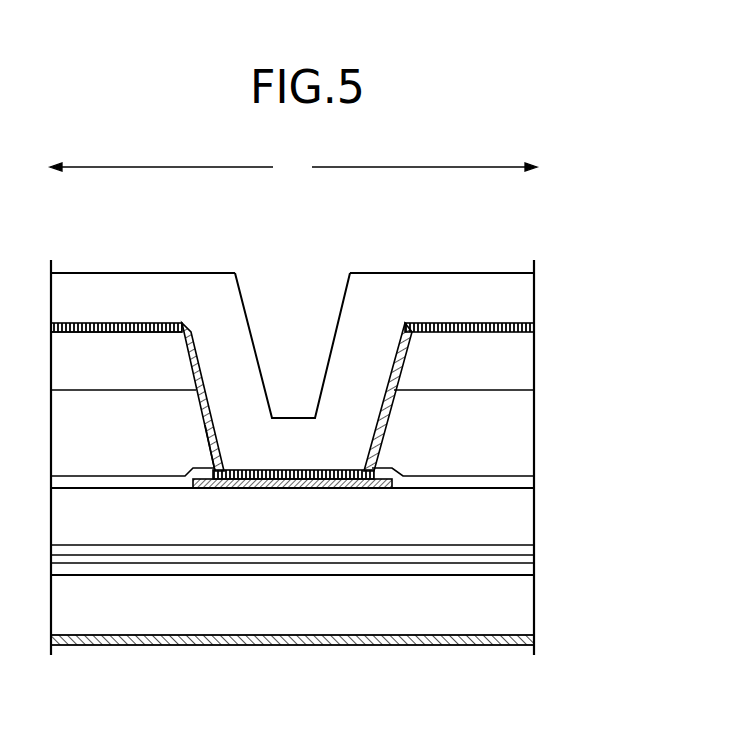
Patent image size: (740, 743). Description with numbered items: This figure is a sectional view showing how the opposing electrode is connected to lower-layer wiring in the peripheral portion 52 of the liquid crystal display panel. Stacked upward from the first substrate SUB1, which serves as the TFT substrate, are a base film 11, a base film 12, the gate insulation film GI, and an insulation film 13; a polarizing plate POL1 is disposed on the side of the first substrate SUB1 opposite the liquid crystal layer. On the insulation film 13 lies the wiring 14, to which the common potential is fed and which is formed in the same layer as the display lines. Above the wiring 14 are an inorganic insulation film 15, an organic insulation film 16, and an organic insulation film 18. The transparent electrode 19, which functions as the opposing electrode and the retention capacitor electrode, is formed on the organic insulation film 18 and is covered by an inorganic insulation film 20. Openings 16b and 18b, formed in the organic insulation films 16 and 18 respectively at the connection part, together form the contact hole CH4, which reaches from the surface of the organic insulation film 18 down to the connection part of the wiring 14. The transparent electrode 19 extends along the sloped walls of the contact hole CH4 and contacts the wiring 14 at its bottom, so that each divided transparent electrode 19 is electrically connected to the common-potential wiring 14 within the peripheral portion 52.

The peripheral portion 52 is at (293, 168).
The transparent electrode 19 is at (137, 323).
The opening 18b is at (188, 347).
The opening 16b is at (210, 423).
The contact hole CH4 is at (205, 402).
The inorganic insulation film 20 is at (517, 295).
The organic insulation film 18 is at (517, 358).
The organic insulation film 16 is at (517, 430).
The wiring 14 is at (343, 485).
The inorganic insulation film 15 is at (452, 483).
The insulation film 13 is at (517, 513).
The gate insulation film GI is at (275, 549).
The base film 12 is at (213, 559).
The base film 11 is at (150, 570).
The first substrate SUB1 is at (517, 605).
The polarizing plate POL1 is at (98, 640).